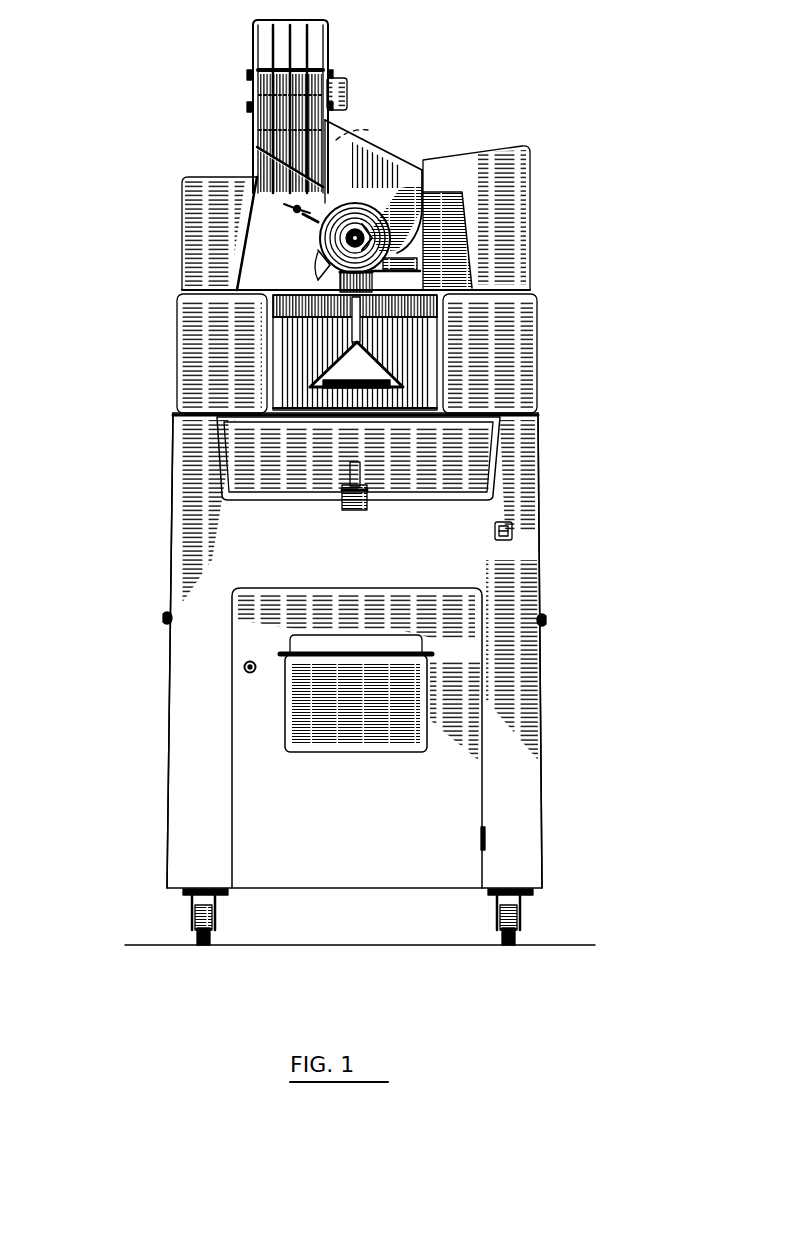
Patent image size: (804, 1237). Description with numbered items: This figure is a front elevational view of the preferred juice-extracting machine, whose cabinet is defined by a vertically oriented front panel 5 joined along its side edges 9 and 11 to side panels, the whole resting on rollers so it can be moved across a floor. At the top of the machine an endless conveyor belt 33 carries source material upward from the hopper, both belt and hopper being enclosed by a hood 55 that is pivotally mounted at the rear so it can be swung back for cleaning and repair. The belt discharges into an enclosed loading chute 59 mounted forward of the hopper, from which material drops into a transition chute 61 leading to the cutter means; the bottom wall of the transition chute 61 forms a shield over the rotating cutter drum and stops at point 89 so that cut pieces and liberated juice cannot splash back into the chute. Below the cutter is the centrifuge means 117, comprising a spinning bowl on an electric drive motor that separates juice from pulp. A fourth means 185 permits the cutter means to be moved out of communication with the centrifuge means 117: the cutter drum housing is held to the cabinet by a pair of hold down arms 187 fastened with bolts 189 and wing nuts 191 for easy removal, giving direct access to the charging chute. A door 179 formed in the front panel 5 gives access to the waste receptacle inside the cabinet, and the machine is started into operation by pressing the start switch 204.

The front panel 5 is at (193, 532).
The side edge 9 is at (172, 698).
The side edge 11 is at (538, 693).
The endless conveyor belt 33 is at (267, 67).
The hood 55 is at (193, 205).
The enclosed loading chute 59 is at (327, 23).
The transition chute 61 is at (360, 139).
The point 89 is at (350, 202).
The centrifuge means 117 is at (452, 341).
The door 179 is at (242, 712).
The fourth means 185 is at (412, 247).
The hold down arms 187 is at (320, 250).
The bolts 189 is at (284, 204).
The wing nuts 191 is at (303, 214).
The start switch 204 is at (512, 530).